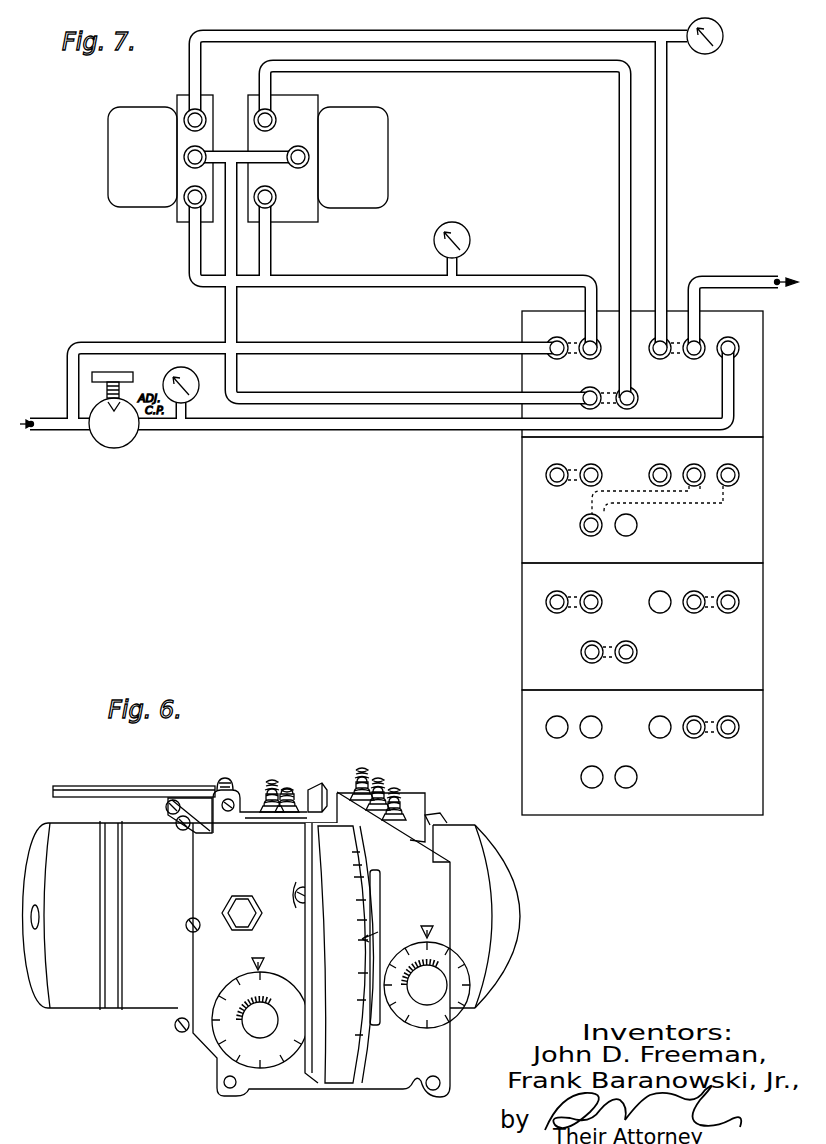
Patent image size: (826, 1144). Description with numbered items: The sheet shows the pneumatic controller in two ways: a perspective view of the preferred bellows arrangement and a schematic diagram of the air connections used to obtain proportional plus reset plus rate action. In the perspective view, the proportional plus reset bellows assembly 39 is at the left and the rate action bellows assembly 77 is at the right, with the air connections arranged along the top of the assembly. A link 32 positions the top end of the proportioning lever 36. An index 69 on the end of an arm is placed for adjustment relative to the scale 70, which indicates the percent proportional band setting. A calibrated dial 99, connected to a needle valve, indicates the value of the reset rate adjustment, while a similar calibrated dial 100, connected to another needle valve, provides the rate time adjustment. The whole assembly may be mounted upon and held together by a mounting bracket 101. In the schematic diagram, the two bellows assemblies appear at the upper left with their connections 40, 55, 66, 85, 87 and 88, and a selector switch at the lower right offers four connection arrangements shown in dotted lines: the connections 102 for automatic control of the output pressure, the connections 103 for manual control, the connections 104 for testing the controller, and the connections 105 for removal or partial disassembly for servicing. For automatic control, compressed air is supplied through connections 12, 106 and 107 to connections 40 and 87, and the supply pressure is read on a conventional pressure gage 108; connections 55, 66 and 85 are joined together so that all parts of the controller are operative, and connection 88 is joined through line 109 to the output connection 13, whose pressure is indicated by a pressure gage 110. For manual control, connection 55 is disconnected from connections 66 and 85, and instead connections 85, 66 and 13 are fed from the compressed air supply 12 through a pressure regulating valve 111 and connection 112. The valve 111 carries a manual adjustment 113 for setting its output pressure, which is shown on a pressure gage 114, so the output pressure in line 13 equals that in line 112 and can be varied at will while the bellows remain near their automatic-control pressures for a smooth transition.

In FIG. 7, the compressed air supply connection 12 is at (43, 417).
In FIG. 7, the output connection 13 is at (735, 276).
In FIG. 6, the link 32 is at (125, 786).
In FIG. 6, the proportioning lever 36 is at (322, 783).
In FIG. 7, the proportional plus reset bellows assembly 39 is at (388, 157).
In FIG. 6, the proportional plus reset bellows assembly 39 is at (130, 1000).
In FIG. 7, the connection 40 is at (275, 197).
In FIG. 6, the connection 40 is at (272, 778).
In FIG. 7, the connection 55 is at (275, 118).
In FIG. 6, the connection 55 is at (289, 780).
In FIG. 7, the connection 66 is at (308, 157).
In FIG. 6, the connection 66 is at (225, 776).
In FIG. 6, the index 69 is at (378, 932).
In FIG. 6, the scale 70 is at (340, 1085).
In FIG. 7, the rate action bellows assembly 77 is at (140, 108).
In FIG. 6, the rate action bellows assembly 77 is at (448, 823).
In FIG. 7, the connection 85 is at (185, 157).
In FIG. 6, the connection 85 is at (380, 777).
In FIG. 7, the connection 87 is at (185, 197).
In FIG. 6, the connection 87 is at (362, 766).
In FIG. 7, the connection 88 is at (205, 118).
In FIG. 6, the connection 88 is at (398, 790).
In FIG. 6, the calibrated dial 99 is at (228, 985).
In FIG. 6, the calibrated dial 100 is at (455, 1010).
In FIG. 6, the mounting bracket 101 is at (385, 1092).
In FIG. 7, the connections for automatic control 102 is at (763, 372).
In FIG. 7, the connections for manual control 103 is at (763, 497).
In FIG. 7, the connections for testing 104 is at (763, 620).
In FIG. 7, the connections for servicing 105 is at (763, 745).
In FIG. 7, the connection 106 is at (388, 343).
In FIG. 7, the connection 107 is at (522, 274).
In FIG. 7, the pressure gage 108 is at (465, 230).
In FIG. 7, the line 109 is at (667, 182).
In FIG. 7, the pressure gage 110 is at (723, 36).
In FIG. 7, the pressure regulating valve 111 is at (118, 448).
In FIG. 7, the connection 112 is at (390, 431).
In FIG. 7, the manual adjustment 113 is at (122, 372).
In FIG. 7, the pressure gage 114 is at (193, 374).